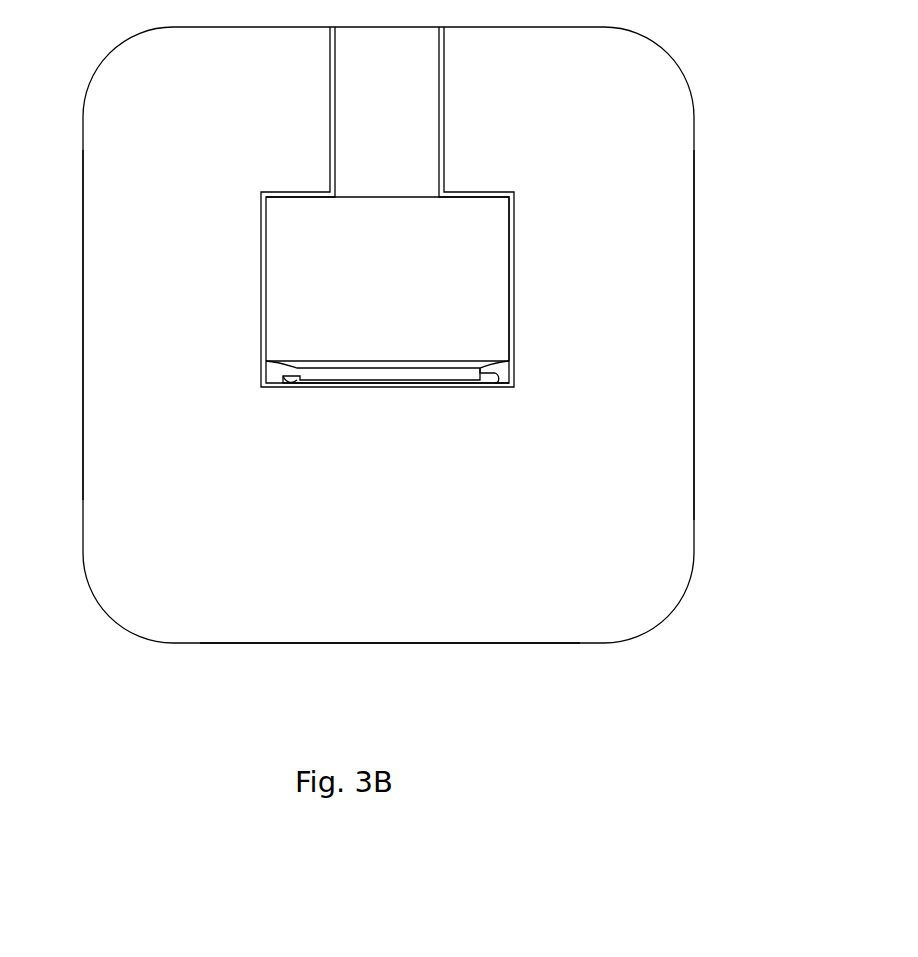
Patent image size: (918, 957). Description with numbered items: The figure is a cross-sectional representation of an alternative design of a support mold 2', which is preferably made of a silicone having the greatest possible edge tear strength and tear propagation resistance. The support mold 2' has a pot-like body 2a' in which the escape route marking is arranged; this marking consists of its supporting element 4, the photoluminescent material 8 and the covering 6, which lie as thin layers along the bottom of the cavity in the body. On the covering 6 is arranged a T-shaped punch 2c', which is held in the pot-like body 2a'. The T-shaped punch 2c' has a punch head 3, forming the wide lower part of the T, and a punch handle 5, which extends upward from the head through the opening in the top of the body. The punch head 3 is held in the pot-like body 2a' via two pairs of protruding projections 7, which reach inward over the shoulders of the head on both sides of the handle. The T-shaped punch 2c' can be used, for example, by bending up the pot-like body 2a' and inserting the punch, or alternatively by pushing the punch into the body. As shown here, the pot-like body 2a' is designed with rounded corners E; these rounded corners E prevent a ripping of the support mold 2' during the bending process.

The rounded corners E is at (667, 55).
The support mold 2' is at (741, 335).
The pot-like body 2a' is at (487, 546).
The T-shaped punch 2c' is at (519, 205).
The punch head 3 is at (387, 279).
The supporting element 4 is at (508, 390).
The punch handle 5 is at (387, 207).
The covering 6 is at (510, 362).
The protruding projections 7 is at (338, 302).
The photoluminescent material 8 is at (303, 375).